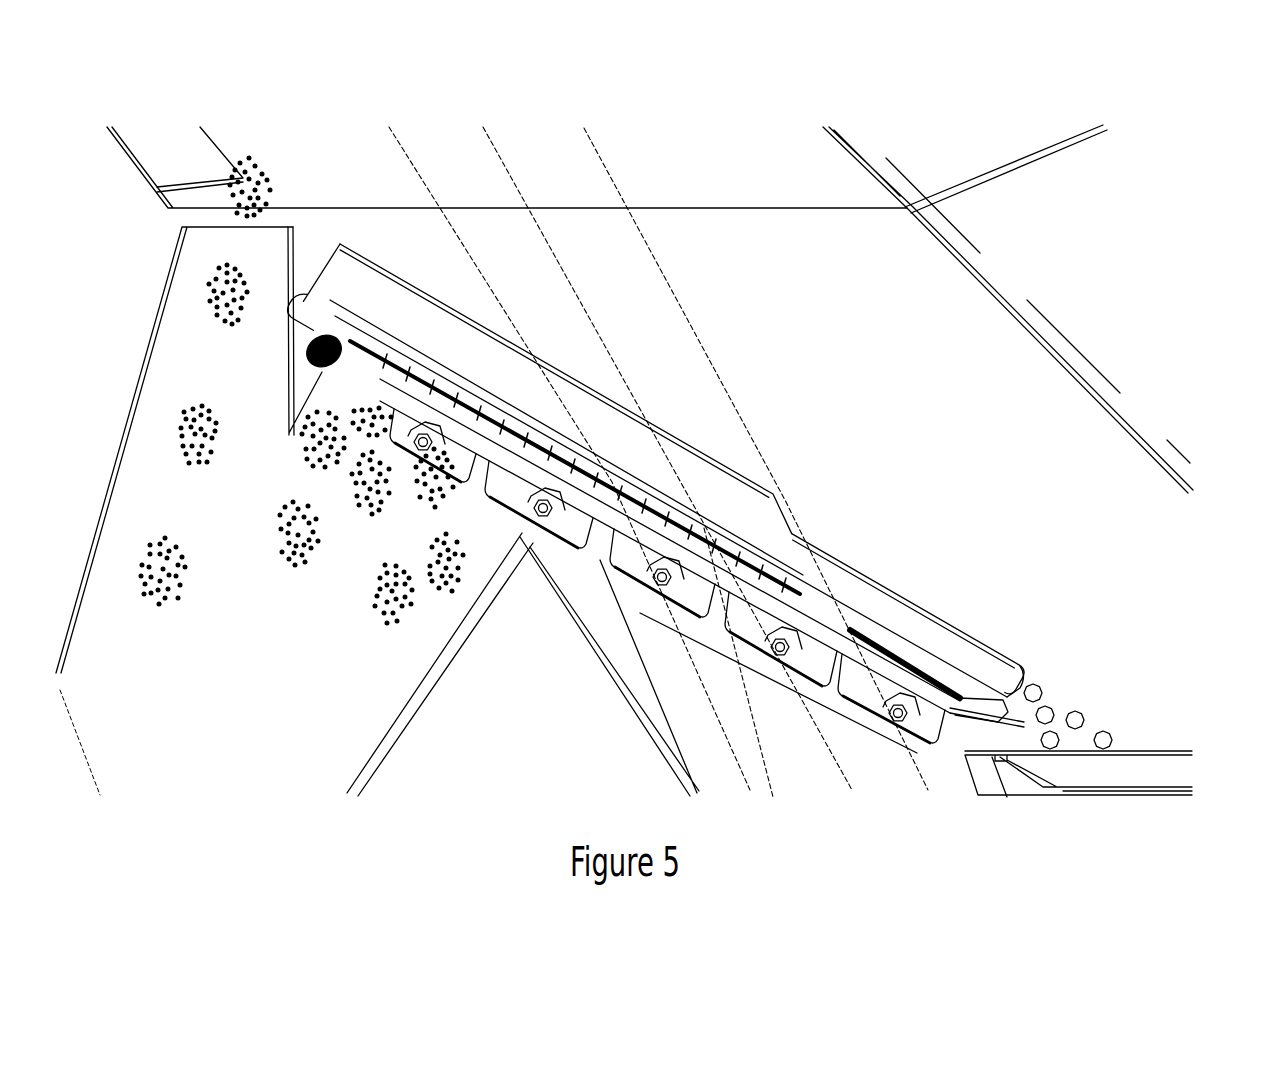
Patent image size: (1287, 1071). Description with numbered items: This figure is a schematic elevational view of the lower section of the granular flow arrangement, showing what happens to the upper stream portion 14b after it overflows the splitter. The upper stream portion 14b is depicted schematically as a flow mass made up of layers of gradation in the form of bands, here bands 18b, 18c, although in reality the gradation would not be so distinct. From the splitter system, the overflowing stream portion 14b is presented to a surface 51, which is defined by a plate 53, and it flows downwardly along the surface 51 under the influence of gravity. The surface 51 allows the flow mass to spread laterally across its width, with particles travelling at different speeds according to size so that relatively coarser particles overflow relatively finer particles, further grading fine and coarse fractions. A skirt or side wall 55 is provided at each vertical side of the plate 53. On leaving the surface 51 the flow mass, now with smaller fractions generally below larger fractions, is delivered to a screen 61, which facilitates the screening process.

The upper stream portion 14b is at (600, 185).
The band 18b is at (457, 170).
The band 18c is at (562, 150).
The surface 51 is at (706, 553).
The plate 53 is at (850, 617).
The skirt or side wall 55 is at (932, 632).
The screen 61 is at (1078, 780).